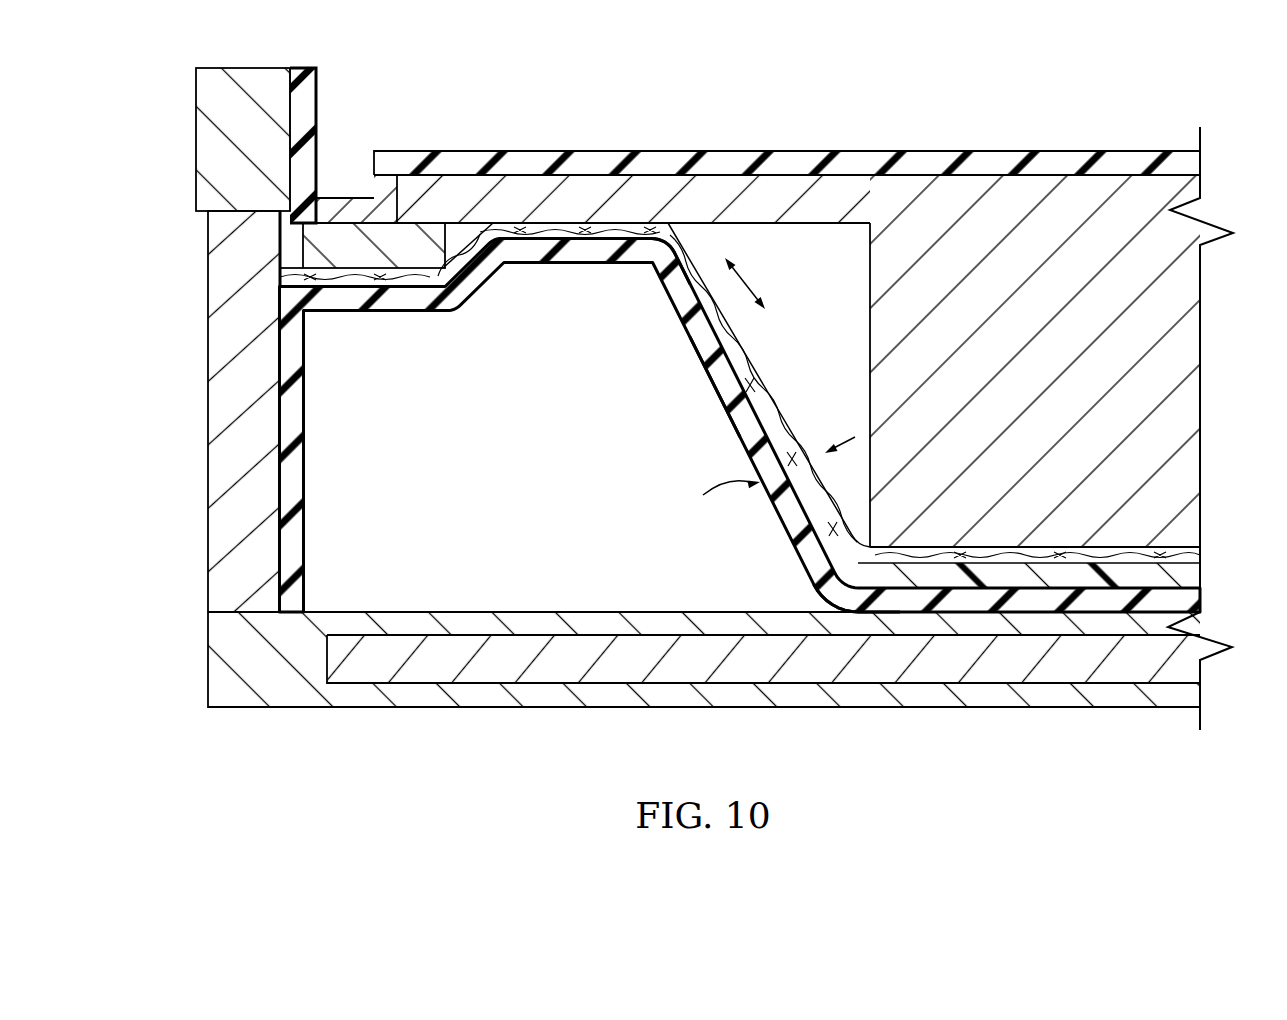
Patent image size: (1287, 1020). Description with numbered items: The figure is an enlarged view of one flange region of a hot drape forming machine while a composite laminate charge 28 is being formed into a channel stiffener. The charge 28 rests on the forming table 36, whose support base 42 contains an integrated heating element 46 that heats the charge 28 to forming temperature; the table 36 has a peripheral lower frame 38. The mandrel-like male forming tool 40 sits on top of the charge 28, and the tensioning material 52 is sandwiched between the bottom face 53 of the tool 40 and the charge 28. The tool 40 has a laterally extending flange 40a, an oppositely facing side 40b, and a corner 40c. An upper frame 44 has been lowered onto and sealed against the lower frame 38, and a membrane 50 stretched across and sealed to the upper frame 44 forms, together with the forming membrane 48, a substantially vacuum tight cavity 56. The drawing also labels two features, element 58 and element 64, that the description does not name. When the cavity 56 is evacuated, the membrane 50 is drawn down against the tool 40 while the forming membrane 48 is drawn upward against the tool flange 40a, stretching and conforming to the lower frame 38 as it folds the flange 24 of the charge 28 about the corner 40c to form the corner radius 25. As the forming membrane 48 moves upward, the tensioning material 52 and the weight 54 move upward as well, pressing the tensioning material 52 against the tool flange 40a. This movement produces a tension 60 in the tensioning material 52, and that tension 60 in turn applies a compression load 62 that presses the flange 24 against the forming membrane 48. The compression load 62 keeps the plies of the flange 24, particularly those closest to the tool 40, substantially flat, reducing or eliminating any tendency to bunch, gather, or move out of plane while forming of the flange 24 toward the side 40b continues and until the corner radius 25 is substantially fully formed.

The flange 24 is at (777, 420).
The corner radius 25 is at (843, 614).
The laminate charge 28 is at (1201, 578).
The forming table 36 is at (934, 114).
The lower frame 38 is at (210, 485).
The forming tool 40 is at (1022, 378).
The flange 40a is at (595, 182).
The side 40b is at (869, 342).
The corner 40c is at (847, 572).
The support base 42 is at (283, 697).
The upper frame 44 is at (205, 137).
The heating element 46 is at (485, 643).
The forming membrane 48 is at (712, 345).
The membrane 50 is at (1125, 162).
The tensioning material 52 is at (680, 292).
The bottom face 53 is at (1063, 560).
The weight 54 is at (362, 258).
The cavity 56 is at (812, 392).
The seal 58 is at (428, 218).
The tension 60 is at (747, 282).
The compression load 62 is at (758, 473).
The spacer 64 is at (330, 217).